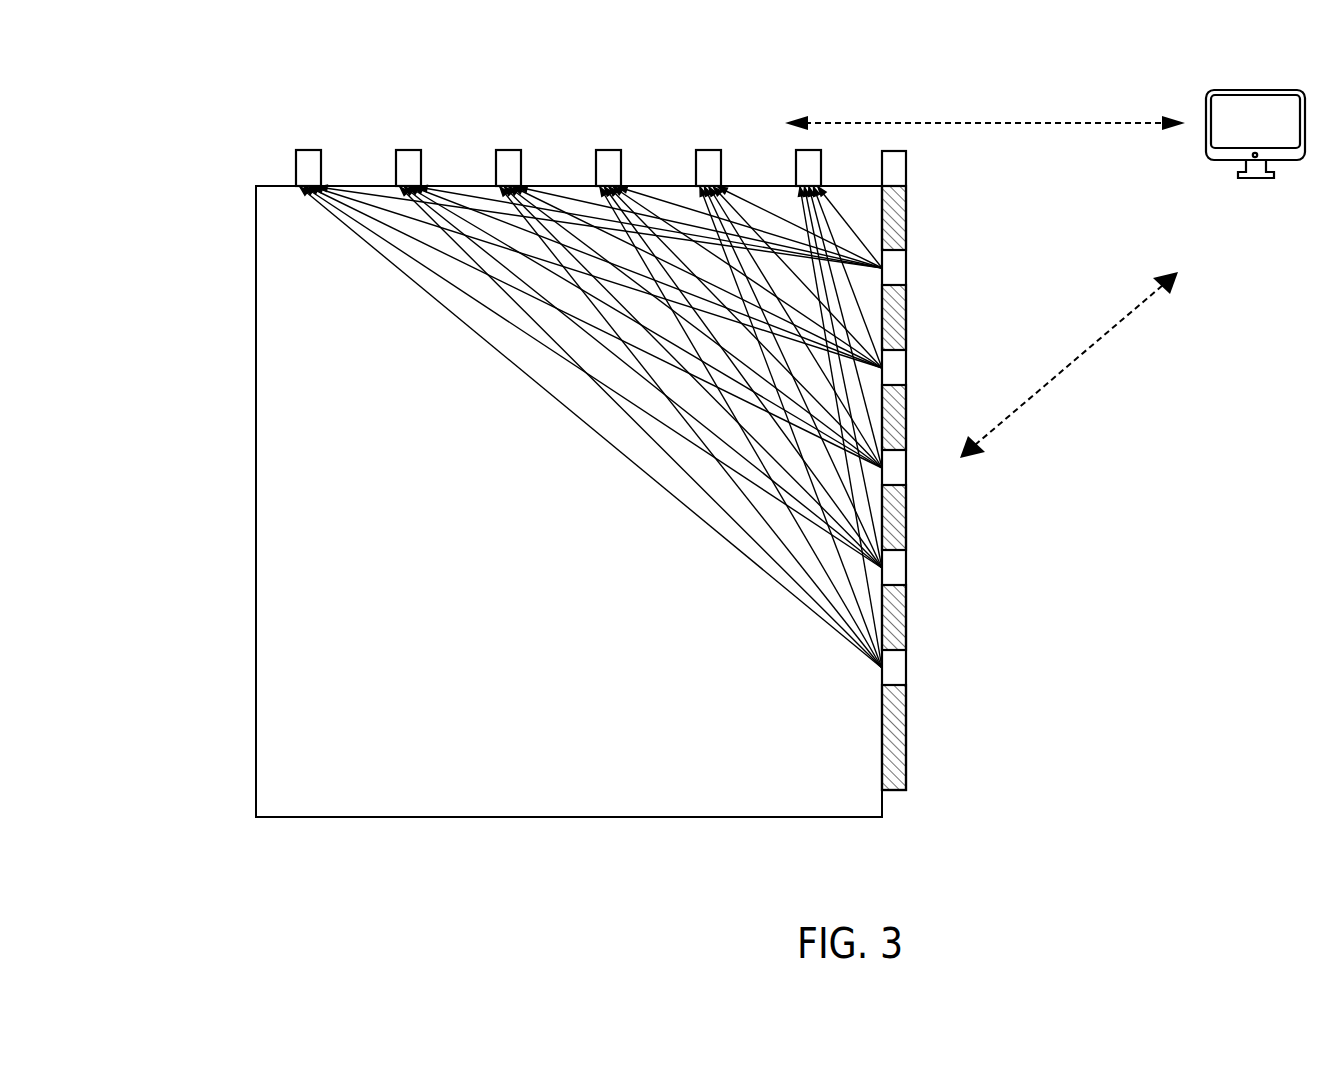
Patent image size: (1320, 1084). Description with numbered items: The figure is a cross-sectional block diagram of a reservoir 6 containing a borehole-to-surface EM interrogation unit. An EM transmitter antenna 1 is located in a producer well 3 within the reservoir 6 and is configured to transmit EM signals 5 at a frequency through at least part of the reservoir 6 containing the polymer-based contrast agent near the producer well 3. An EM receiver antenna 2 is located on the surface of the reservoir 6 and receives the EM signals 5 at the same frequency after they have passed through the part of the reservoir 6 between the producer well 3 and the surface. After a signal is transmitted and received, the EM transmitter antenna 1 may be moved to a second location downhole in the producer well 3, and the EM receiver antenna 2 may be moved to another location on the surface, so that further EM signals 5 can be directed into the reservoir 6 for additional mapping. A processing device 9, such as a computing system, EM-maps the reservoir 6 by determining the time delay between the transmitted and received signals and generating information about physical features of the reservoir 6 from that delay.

The EM transmitter antenna 1 is at (906, 160).
The EM receiver antenna 2 is at (310, 150).
The producer well 3 is at (893, 792).
The EM signals 5 is at (452, 332).
The reservoir 6 is at (256, 598).
The processing device 9 is at (1256, 180).